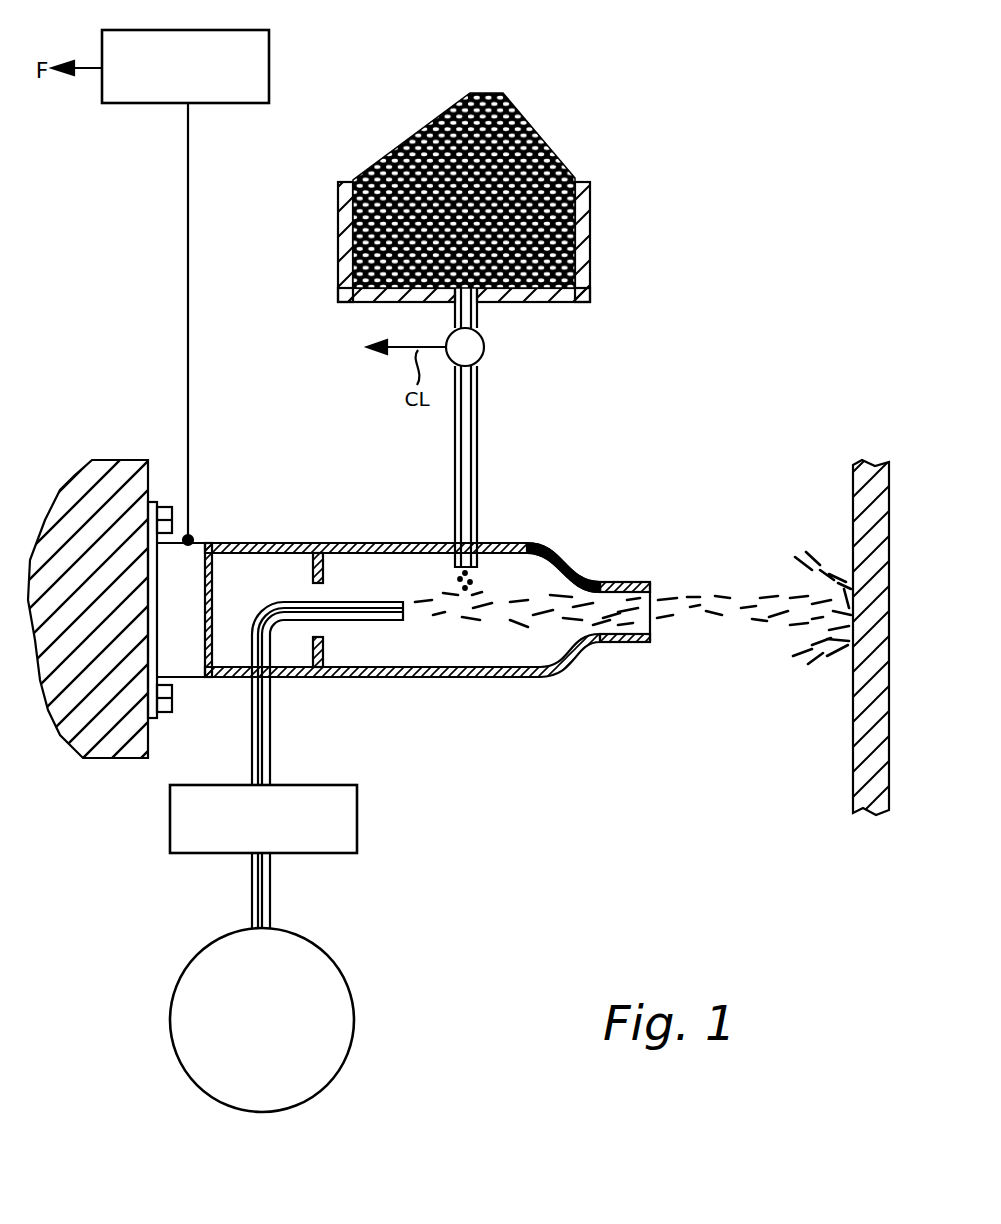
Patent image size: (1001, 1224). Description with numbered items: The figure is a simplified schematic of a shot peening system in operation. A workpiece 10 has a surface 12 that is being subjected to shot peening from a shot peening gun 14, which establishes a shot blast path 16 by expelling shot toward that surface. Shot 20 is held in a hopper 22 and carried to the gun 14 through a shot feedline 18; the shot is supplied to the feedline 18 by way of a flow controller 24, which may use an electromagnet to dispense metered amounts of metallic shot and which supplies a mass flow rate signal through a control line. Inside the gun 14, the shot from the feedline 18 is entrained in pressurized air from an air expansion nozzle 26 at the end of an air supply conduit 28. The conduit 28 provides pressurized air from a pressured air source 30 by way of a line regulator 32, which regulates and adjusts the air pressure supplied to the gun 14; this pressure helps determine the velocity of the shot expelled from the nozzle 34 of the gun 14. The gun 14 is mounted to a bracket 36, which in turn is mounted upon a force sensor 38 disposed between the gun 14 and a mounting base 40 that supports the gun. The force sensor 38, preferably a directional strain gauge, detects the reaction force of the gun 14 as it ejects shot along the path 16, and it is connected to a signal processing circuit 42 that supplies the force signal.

The workpiece 10 is at (853, 462).
The surface 12 is at (857, 724).
The shot peening gun 14 is at (382, 543).
The shot blast path 16 is at (769, 617).
The shot feedline 18 is at (477, 462).
The shot 20 is at (540, 142).
The hopper 22 is at (592, 235).
The flow controller 24 is at (485, 350).
The air expansion nozzle 26 is at (417, 620).
The air supply conduit 28 is at (272, 750).
The pressured air source 30 is at (347, 973).
The line regulator 32 is at (357, 810).
The nozzle 34 is at (633, 642).
The bracket 36 is at (283, 677).
The force sensor 38 is at (183, 677).
The mounting base 40 is at (82, 512).
The signal processing circuit 42 is at (270, 75).